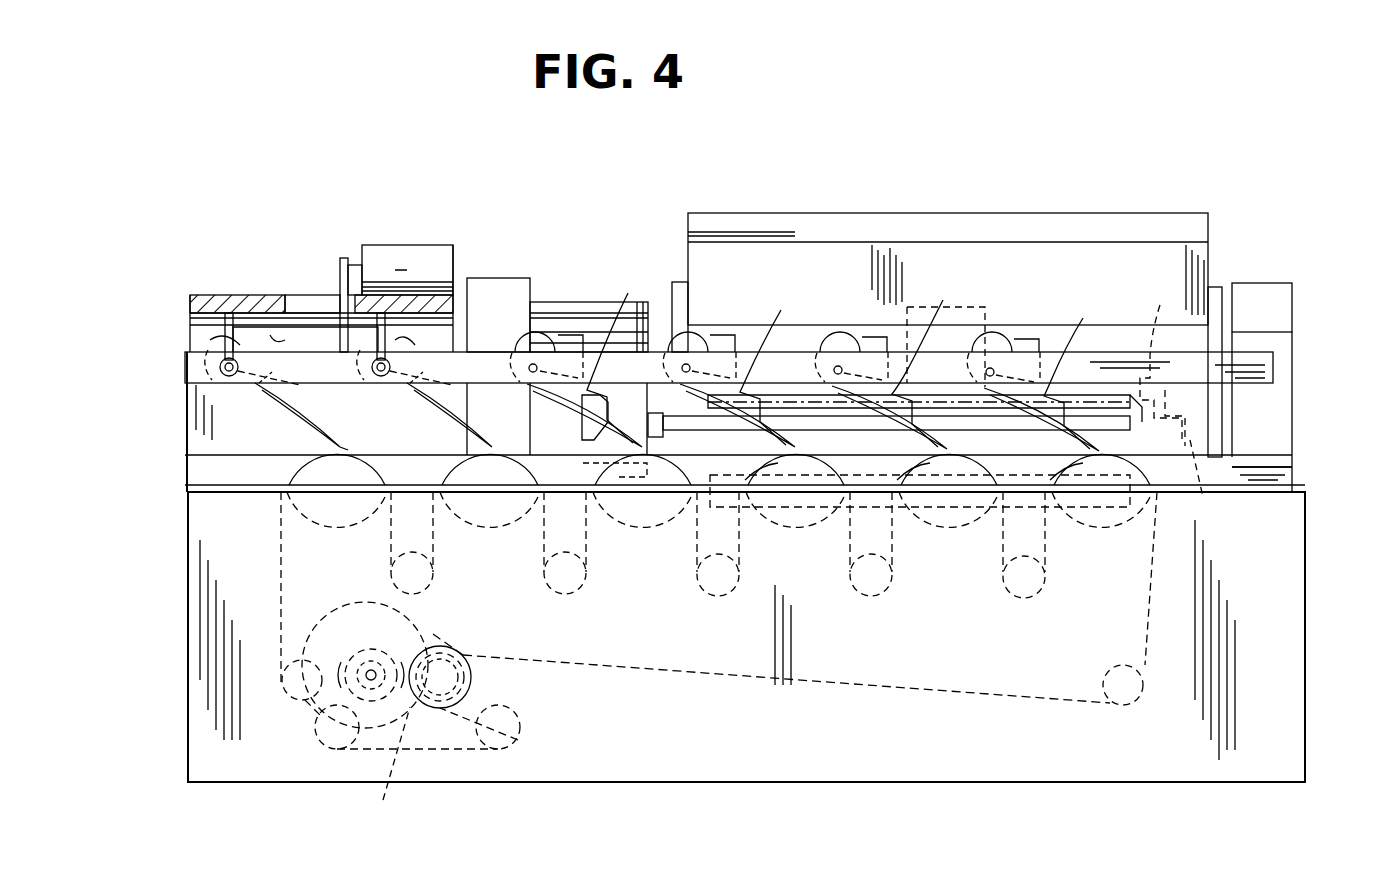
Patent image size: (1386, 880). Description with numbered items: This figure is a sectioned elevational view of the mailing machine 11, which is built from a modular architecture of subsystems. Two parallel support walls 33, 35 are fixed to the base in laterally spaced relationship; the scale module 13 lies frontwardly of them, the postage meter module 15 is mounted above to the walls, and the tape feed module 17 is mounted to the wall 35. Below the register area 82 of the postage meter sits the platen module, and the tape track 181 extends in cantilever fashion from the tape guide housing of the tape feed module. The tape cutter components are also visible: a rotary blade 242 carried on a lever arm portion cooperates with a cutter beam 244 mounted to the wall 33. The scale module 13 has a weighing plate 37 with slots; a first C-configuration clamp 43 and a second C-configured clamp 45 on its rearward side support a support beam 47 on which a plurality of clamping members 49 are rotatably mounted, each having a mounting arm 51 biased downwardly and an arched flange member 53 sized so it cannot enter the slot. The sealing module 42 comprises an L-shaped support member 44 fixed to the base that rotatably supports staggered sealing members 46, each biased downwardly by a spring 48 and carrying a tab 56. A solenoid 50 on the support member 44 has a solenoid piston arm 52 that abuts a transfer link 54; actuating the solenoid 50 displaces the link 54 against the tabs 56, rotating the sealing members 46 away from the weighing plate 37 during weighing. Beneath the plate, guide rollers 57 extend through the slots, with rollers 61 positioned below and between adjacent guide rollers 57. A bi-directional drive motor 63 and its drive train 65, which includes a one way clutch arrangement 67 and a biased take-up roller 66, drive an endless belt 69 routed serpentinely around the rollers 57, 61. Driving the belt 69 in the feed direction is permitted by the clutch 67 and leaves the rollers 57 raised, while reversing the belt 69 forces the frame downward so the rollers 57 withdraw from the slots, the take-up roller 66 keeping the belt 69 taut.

The mailing machine 11 is at (315, 163).
The scale module 13 is at (1310, 430).
The postage meter module 15 is at (940, 198).
The tape feed module 17 is at (548, 276).
The support wall 33 is at (1218, 287).
The support wall 35 is at (676, 290).
The weighing plate 37 is at (1293, 470).
The sealing module 42 is at (210, 262).
The first C-configuration clamp 43 is at (1262, 283).
The L-shaped support member 44 is at (197, 292).
The second C-configured clamp 45 is at (493, 278).
The sealing members 46 is at (270, 432).
The support beam 47 is at (1275, 365).
The spring 48 is at (266, 398).
The clamping members 49 is at (540, 338).
The solenoid 50 is at (418, 245).
The mounting arm 51 is at (1083, 318).
The solenoid piston arm 52 is at (350, 268).
The arched flange member 53 is at (586, 438).
The transfer link 54 is at (338, 290).
The tab 56 is at (200, 338).
The guide rollers 57 is at (275, 495).
The rollers 61 is at (695, 575).
The bi-directional drive motor 63 is at (436, 634).
The drive train 65 is at (485, 683).
The take-up roller 66 is at (522, 735).
The one way clutch arrangement 67 is at (379, 763).
The endless belt 69 is at (780, 683).
The register area 82 is at (975, 300).
The tape track 181 is at (710, 432).
The rotary blade 242 is at (1165, 315).
The cutter beam 244 is at (1203, 497).